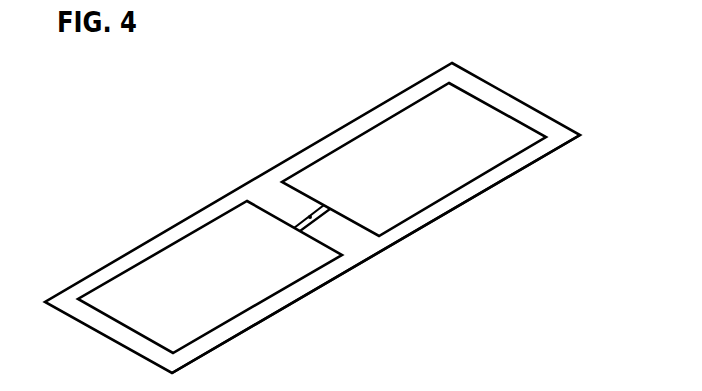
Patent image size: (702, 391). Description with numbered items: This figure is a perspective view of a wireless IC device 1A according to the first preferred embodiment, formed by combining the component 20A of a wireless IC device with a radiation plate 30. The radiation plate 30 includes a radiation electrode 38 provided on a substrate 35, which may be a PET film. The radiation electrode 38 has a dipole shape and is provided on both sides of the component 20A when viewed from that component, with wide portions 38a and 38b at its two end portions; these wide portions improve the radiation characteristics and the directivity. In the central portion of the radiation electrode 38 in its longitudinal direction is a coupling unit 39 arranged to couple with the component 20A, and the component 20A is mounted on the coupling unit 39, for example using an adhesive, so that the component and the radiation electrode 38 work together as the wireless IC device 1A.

The wireless IC device 1A is at (103, 112).
The component of a wireless IC device 20A is at (311, 216).
The radiation plate 30 is at (351, 120).
The substrate 35 is at (563, 145).
The radiation electrode 38 is at (318, 223).
The wide portion 38a is at (250, 286).
The wide portion 38b is at (467, 163).
The coupling unit 39 is at (317, 223).